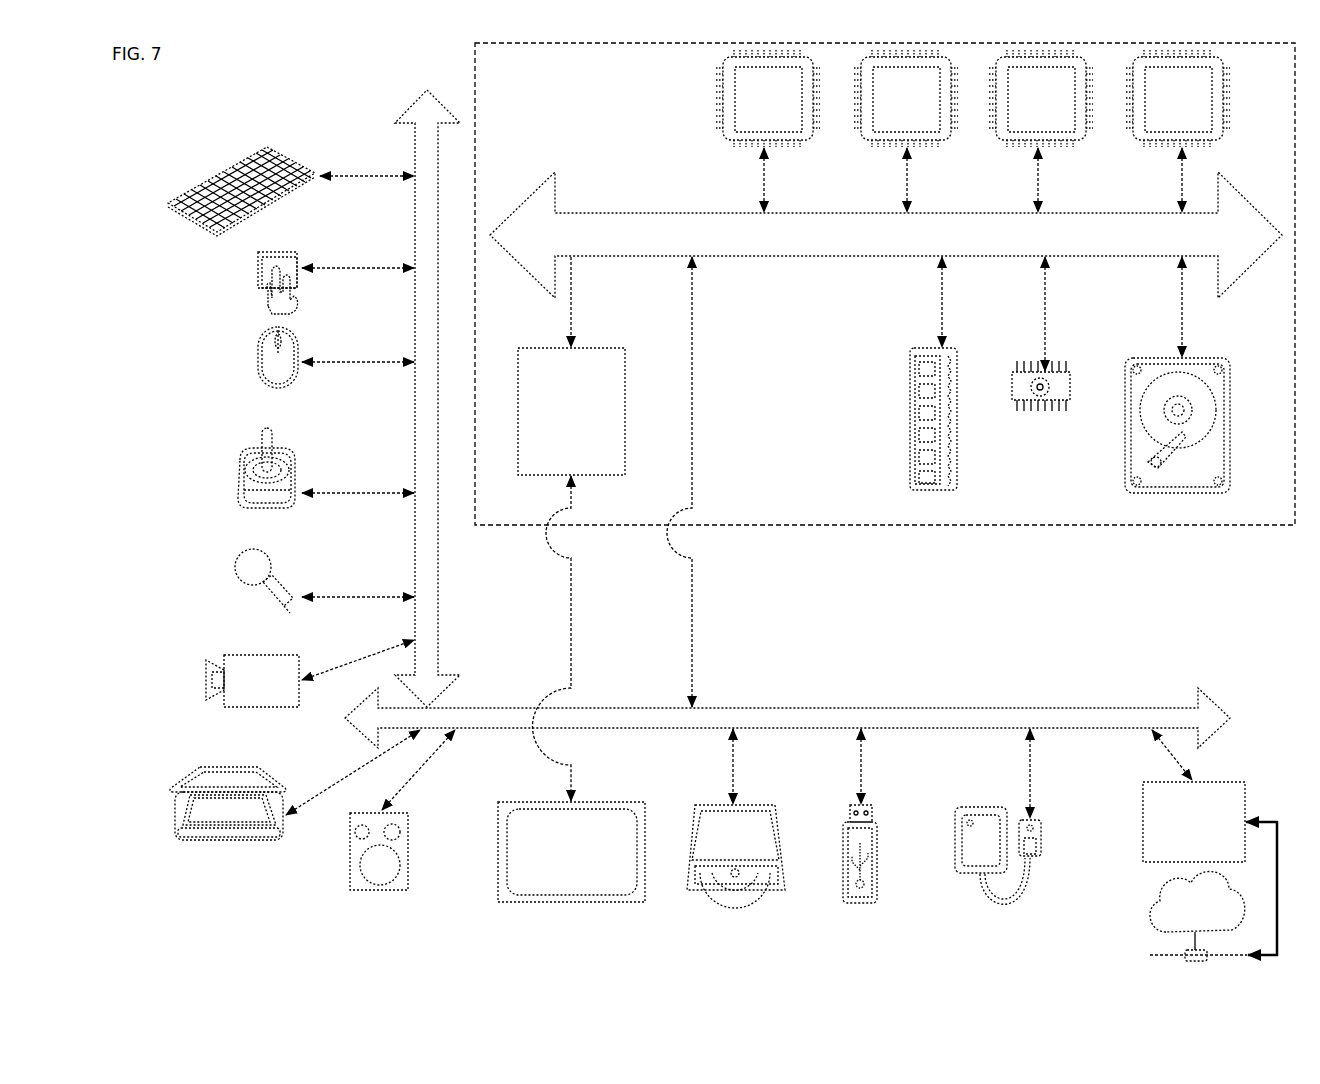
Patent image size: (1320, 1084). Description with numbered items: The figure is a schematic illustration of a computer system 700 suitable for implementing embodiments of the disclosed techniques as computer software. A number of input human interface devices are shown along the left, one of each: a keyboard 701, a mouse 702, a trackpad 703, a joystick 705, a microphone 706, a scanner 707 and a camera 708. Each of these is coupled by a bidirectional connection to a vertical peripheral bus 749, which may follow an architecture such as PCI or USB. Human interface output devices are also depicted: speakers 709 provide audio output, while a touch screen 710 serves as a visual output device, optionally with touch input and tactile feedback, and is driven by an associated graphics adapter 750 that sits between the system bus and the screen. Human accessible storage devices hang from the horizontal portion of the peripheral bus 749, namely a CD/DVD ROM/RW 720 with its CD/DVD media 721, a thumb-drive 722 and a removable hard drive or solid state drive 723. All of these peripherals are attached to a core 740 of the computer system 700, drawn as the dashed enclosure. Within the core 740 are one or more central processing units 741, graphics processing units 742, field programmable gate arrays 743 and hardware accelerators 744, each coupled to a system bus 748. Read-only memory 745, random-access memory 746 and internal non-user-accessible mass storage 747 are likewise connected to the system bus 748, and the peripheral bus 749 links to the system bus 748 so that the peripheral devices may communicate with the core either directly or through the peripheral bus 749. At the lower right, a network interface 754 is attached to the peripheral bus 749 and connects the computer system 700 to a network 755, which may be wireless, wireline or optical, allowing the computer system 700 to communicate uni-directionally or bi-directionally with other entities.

The computer system 700 is at (305, 90).
The keyboard 701 is at (172, 206).
The mouse 702 is at (252, 360).
The trackpad 703 is at (252, 280).
The joystick 705 is at (238, 490).
The microphone 706 is at (236, 565).
The scanner 707 is at (176, 825).
The camera 708 is at (208, 681).
The speakers 709 is at (380, 891).
The touch screen 710 is at (571, 903).
The CD/DVD ROM/RW 720 is at (756, 842).
The CD/DVD media 721 is at (720, 893).
The thumb-drive 722 is at (860, 904).
The removable hard drive or solid state drive 723 is at (960, 879).
The core 740 is at (878, 527).
The central processing unit 741 is at (768, 131).
The graphics processing unit 742 is at (906, 131).
The field programmable gate array 743 is at (1041, 131).
The hardware accelerator 744 is at (1178, 131).
The read-only memory 745 is at (1037, 412).
The random-access memory 746 is at (912, 405).
The internal mass storage 747 is at (1143, 357).
The system bus 748 is at (886, 235).
The peripheral bus 749 is at (406, 128).
The graphics adapter 750 is at (571, 529).
The network interface 754 is at (1210, 842).
The network 755 is at (1150, 917).